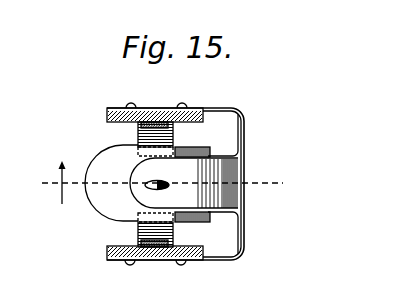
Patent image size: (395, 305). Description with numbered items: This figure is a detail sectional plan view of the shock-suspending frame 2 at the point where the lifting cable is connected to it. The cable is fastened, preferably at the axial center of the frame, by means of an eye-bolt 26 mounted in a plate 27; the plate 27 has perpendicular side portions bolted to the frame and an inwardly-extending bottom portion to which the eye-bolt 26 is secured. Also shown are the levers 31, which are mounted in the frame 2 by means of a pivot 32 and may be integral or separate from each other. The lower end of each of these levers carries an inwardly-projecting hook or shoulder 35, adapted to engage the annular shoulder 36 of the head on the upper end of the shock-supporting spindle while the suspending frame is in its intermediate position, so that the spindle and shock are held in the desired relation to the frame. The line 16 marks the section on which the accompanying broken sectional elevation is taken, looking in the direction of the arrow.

The shock-suspending frame 2 is at (107, 117).
The section line 16 is at (150, 182).
The eye-bolt 26 is at (156, 187).
The plate 27 is at (219, 188).
The levers 31 is at (141, 125).
The pivot 32 is at (158, 118).
The hook or shoulder 35 is at (175, 138).
The annular shoulder 36 is at (111, 183).